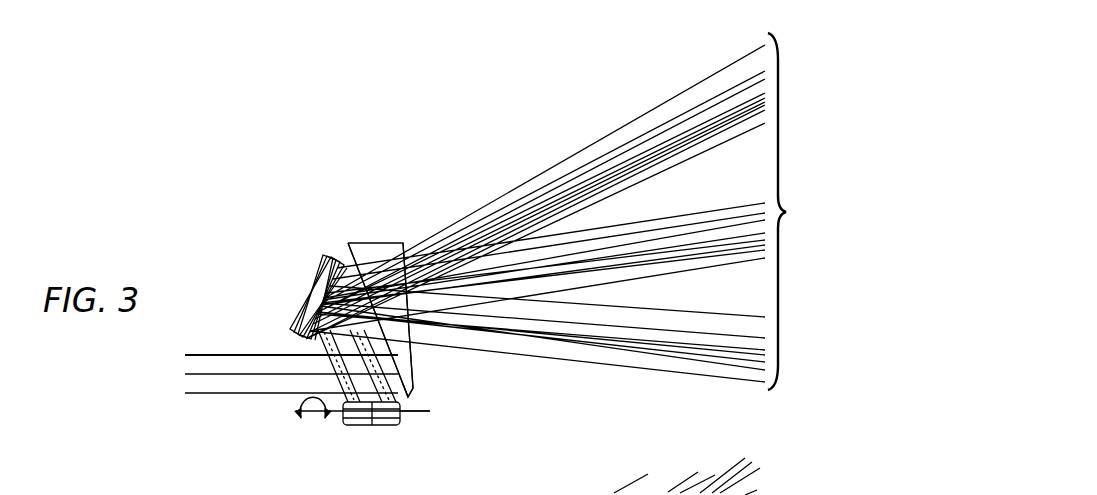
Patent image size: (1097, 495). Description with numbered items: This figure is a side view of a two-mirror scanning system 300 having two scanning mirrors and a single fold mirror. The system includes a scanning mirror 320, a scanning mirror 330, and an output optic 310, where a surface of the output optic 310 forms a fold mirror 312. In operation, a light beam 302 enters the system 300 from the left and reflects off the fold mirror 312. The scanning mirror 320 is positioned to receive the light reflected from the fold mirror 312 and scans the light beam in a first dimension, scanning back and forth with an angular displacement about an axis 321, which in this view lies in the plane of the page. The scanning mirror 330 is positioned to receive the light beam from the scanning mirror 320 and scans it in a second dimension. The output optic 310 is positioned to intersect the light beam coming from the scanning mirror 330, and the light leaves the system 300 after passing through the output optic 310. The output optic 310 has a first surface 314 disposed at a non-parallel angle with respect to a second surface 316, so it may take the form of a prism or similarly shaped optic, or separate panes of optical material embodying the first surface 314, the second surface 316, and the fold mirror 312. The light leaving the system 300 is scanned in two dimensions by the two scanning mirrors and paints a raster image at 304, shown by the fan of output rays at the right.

The two-mirror scanning system 300 is at (243, 192).
The light beam 302 is at (215, 395).
The raster image 304 is at (788, 212).
The output optic 310 is at (372, 242).
The fold mirror 312 is at (397, 373).
The first surface 314 is at (342, 249).
The second surface 316 is at (406, 246).
The scanning mirror 320 is at (357, 426).
The axis 321 is at (420, 414).
The scanning mirror 330 is at (306, 298).